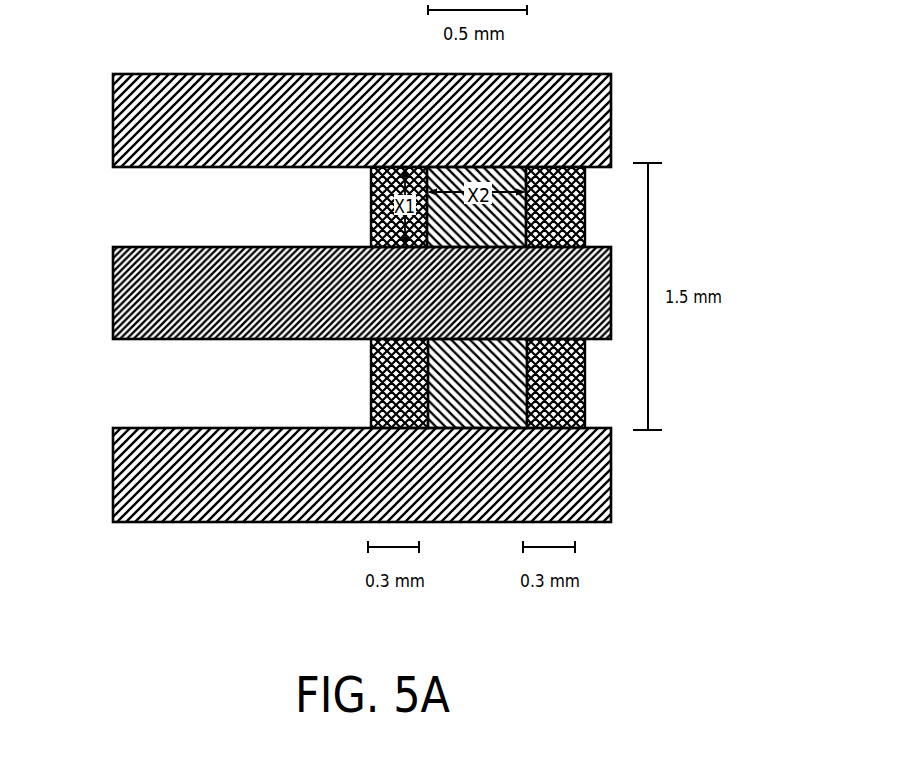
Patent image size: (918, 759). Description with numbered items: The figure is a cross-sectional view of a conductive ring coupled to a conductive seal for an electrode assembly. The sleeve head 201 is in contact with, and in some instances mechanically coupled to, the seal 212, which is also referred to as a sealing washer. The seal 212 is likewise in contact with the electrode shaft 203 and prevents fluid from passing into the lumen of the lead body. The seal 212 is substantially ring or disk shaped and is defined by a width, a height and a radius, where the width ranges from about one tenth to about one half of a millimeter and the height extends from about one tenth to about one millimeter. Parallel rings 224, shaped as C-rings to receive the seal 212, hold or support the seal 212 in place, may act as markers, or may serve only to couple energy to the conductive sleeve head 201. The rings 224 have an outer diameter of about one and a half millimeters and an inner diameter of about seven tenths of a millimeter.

The sleeve head 201 is at (612, 125).
The electrode shaft 203 is at (113, 294).
The seal 212 is at (540, 242).
The rings 224 is at (371, 235).